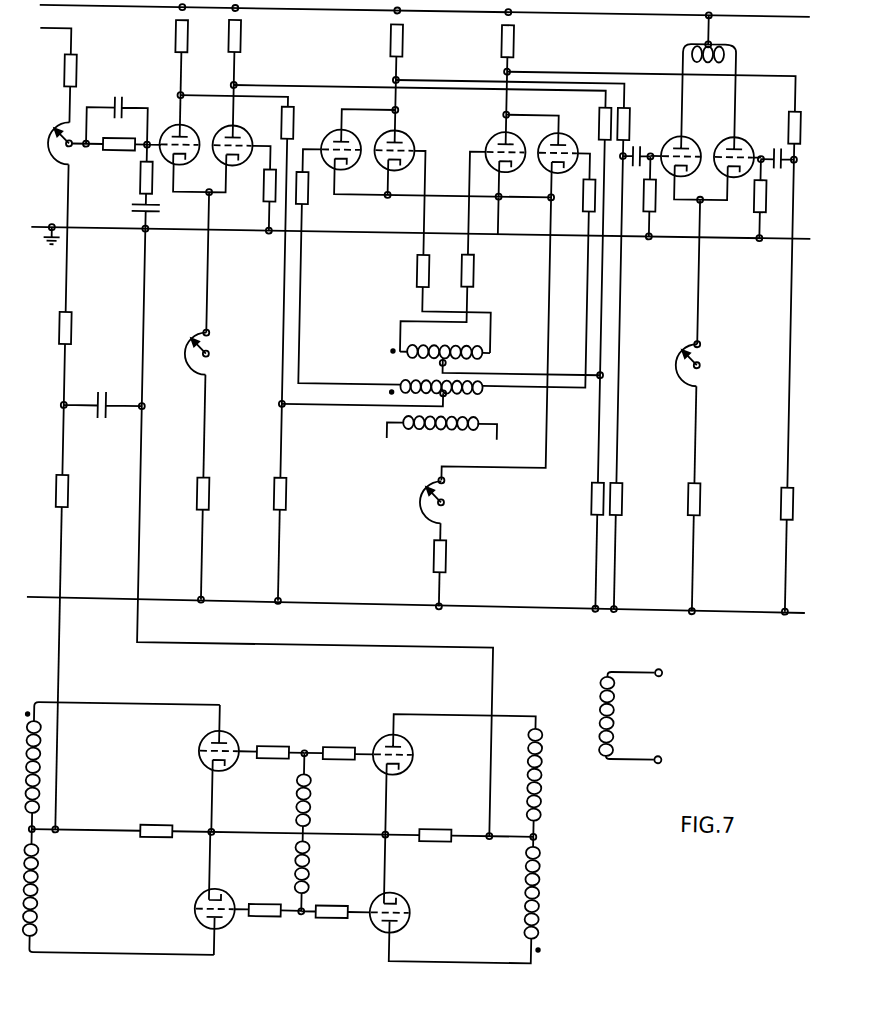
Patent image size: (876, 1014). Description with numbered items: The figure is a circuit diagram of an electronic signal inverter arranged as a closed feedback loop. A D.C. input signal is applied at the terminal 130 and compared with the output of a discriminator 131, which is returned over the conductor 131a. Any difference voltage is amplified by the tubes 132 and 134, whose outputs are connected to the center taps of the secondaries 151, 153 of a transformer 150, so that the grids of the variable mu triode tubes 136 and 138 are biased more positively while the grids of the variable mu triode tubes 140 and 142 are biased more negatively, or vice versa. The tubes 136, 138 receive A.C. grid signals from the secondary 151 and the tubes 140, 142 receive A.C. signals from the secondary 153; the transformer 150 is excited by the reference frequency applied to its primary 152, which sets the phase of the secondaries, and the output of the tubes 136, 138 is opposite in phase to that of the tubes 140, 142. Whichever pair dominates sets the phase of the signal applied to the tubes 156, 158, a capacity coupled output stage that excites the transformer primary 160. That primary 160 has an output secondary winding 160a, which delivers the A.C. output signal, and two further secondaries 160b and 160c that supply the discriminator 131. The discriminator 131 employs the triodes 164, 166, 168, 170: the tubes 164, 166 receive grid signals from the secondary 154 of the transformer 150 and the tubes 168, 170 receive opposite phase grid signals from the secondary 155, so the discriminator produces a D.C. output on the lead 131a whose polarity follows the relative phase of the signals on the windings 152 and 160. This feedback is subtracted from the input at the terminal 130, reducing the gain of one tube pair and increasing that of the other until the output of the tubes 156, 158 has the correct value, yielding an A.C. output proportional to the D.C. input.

The terminal 130 is at (34, 35).
The discriminator 131 is at (274, 808).
The conductor 131a is at (64, 572).
The tube 132 is at (155, 127).
The tube 134 is at (242, 120).
The variable mu triode tube 136 is at (316, 138).
The variable mu triode tube 138 is at (555, 135).
The variable mu triode tube 140 is at (401, 137).
The variable mu triode tube 142 is at (481, 136).
The transformer 150 is at (441, 389).
The secondary 151 is at (475, 399).
The primary 152 is at (476, 421).
The secondary 153 is at (445, 345).
The secondary 154 is at (318, 804).
The secondary 155 is at (332, 878).
The tube 156 is at (670, 129).
The tube 158 is at (758, 123).
The transformer primary 160 is at (722, 55).
The output secondary winding 160a is at (601, 689).
The secondary 160b is at (30, 726).
The secondary 160c is at (551, 801).
The triode 164 is at (238, 738).
The triode 166 is at (382, 739).
The triode 168 is at (241, 896).
The triode 170 is at (412, 875).